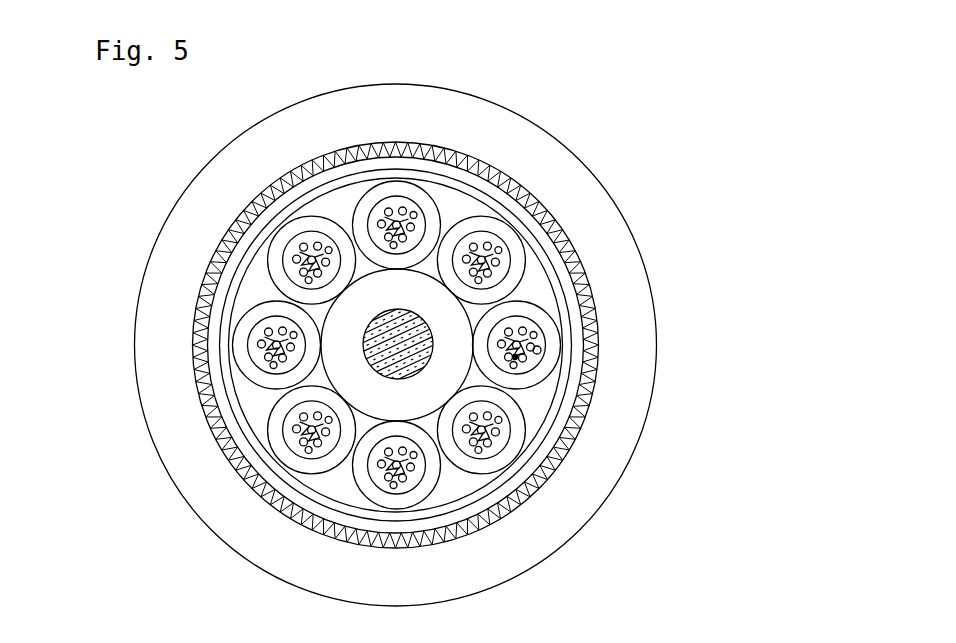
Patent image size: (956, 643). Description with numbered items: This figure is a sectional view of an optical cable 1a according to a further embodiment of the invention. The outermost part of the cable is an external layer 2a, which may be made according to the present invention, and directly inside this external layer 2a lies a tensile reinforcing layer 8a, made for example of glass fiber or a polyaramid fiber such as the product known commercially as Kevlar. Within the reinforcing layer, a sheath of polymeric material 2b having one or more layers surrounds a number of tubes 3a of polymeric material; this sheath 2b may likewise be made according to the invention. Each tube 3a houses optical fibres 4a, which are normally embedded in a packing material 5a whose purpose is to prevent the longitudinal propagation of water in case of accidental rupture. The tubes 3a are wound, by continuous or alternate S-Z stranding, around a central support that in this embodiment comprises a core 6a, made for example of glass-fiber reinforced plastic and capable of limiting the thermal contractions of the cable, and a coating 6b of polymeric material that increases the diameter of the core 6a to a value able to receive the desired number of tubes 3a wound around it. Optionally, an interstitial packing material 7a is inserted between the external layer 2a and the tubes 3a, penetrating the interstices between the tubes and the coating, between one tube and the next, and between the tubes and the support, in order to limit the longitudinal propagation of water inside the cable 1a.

The optical cable 1a is at (153, 237).
The external layer 2a is at (562, 178).
The sheath of polymeric material 2b is at (515, 498).
The tube 3a is at (387, 188).
The optical fibre 4a is at (515, 357).
The packing material 5a is at (537, 350).
The core 6a is at (420, 357).
The coating 6b is at (435, 372).
The interstitial packing material 7a is at (452, 482).
The tensile reinforcing layer 8a is at (583, 268).